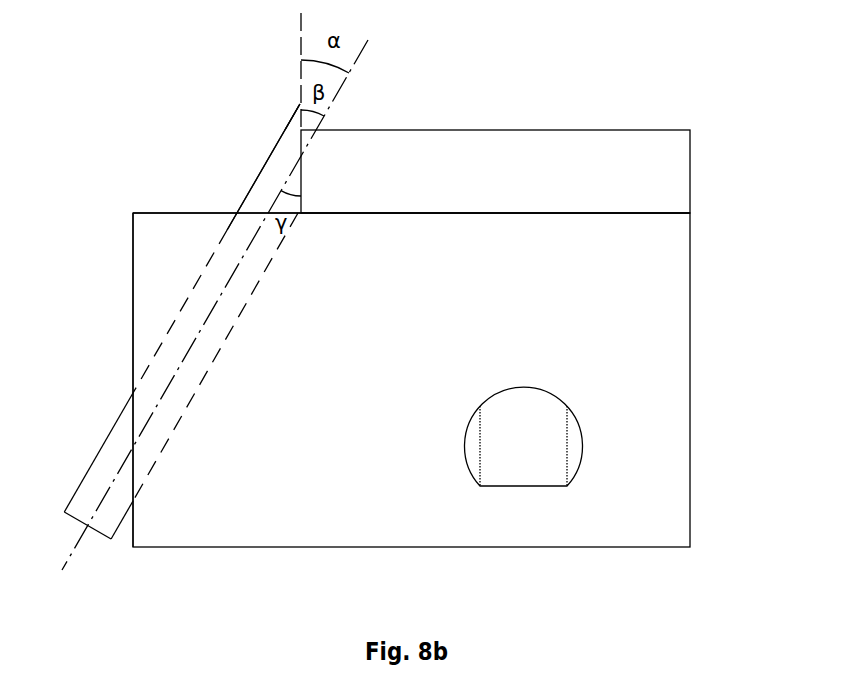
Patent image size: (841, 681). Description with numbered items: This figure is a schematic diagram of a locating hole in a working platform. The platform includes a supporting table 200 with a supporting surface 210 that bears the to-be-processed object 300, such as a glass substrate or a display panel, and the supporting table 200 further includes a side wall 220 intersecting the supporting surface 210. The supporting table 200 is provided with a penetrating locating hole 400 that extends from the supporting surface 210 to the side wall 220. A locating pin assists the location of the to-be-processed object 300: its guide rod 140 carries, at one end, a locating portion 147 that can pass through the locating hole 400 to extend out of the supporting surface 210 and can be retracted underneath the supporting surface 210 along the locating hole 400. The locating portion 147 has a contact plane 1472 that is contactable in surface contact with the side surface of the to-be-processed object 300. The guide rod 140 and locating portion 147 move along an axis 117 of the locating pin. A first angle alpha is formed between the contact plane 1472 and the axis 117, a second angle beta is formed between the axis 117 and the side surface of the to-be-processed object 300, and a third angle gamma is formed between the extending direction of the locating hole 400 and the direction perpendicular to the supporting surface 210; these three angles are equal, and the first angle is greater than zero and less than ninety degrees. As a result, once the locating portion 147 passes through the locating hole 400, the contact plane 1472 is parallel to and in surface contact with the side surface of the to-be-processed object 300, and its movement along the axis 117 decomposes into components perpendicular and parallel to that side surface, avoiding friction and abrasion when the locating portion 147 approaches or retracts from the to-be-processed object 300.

The axis 117 is at (368, 42).
The guide rod 140 is at (113, 460).
The locating portion 147 is at (278, 170).
The contact plane 1472 is at (300, 133).
The supporting table 200 is at (650, 437).
The supporting surface 210 is at (588, 214).
The side wall 220 is at (133, 333).
The to-be-processed object 300 is at (478, 157).
The locating hole 400 is at (512, 463).